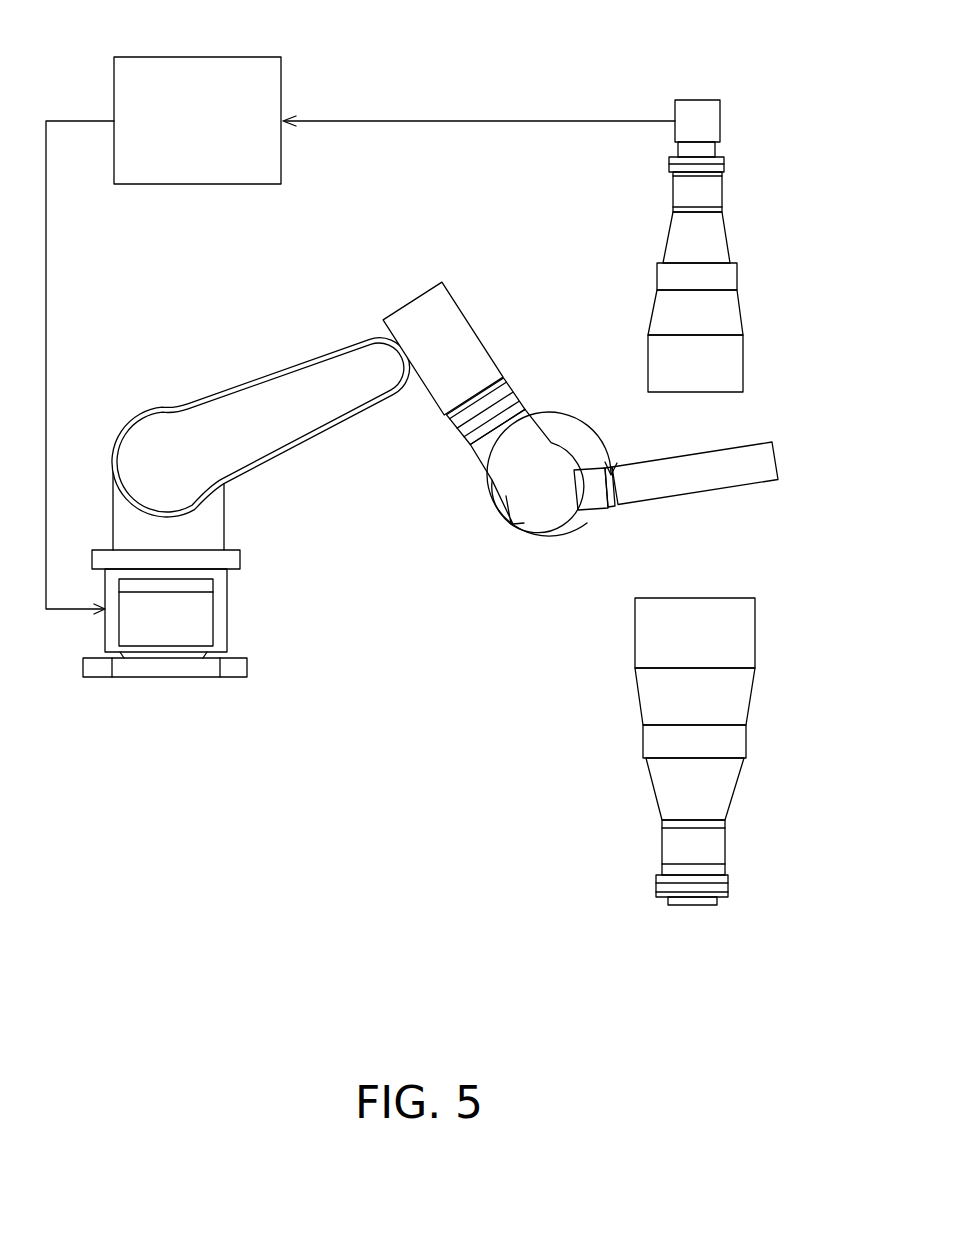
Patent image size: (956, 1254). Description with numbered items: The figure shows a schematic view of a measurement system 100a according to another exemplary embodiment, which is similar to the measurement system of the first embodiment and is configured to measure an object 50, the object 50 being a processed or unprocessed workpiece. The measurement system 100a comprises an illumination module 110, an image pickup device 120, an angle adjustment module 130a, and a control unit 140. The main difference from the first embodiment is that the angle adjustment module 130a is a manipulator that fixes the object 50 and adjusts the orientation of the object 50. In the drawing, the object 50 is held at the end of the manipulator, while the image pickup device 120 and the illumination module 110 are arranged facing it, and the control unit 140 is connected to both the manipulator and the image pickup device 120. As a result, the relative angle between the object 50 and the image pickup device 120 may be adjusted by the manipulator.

The measurement system 100a is at (439, 498).
The illumination module 110 is at (743, 637).
The image pickup device 120 is at (725, 313).
The angle adjustment module 130a is at (288, 423).
The control unit 140 is at (281, 72).
The object 50 is at (698, 482).